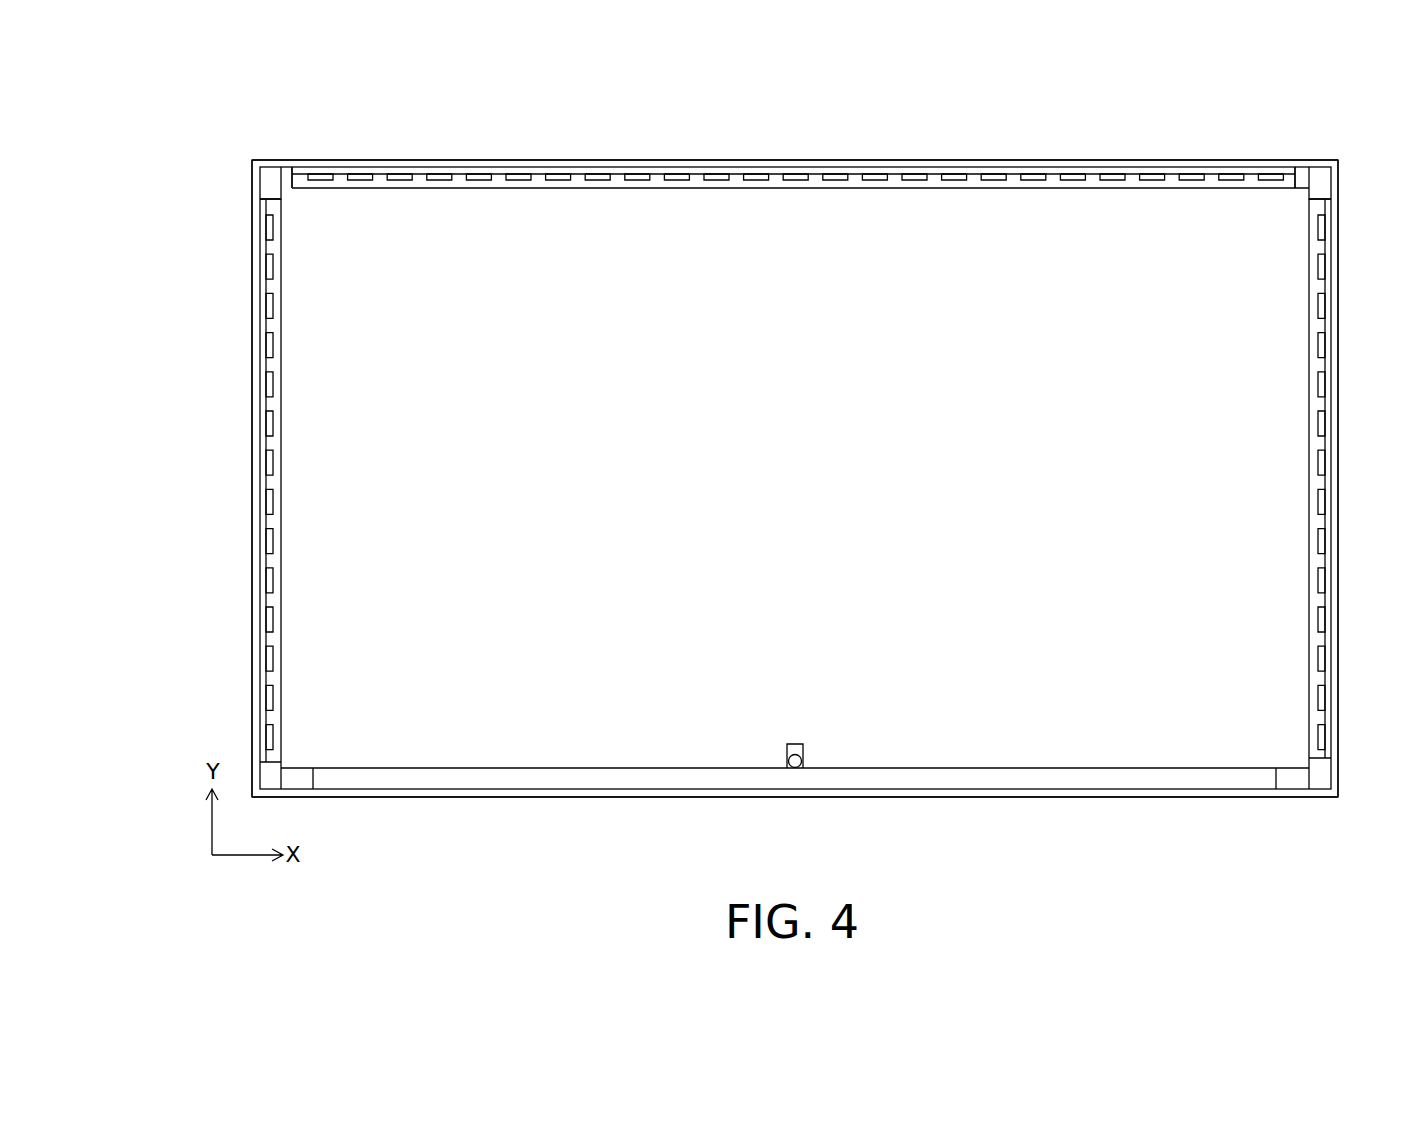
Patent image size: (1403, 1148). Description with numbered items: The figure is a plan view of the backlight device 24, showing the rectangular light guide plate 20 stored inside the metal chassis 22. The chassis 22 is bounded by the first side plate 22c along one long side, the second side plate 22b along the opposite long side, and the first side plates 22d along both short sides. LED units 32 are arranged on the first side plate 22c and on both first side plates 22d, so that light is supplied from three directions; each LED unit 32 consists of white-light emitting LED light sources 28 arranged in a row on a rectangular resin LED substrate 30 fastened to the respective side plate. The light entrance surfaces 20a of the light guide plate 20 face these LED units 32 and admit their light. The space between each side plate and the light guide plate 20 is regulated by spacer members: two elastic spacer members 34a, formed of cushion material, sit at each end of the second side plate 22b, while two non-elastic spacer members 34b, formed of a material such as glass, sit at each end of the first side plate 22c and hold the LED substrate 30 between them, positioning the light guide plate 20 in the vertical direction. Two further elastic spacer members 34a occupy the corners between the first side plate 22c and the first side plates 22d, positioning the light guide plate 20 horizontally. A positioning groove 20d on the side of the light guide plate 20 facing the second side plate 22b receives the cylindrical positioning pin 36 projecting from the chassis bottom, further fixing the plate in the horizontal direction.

The light guide plate 20 is at (936, 213).
The light entrance surface 20a is at (773, 188).
The positioning groove 20d is at (789, 750).
The chassis 22 is at (1335, 293).
The second side plate 22b is at (900, 792).
The first side plate 22c is at (1128, 163).
The first side plate 22d is at (257, 400).
The backlight device 24 is at (626, 136).
The LED light source 28 is at (401, 178).
The LED substrate 30 is at (381, 164).
The LED unit 32 is at (442, 93).
The elastic spacer member 34a is at (270, 183).
The non-elastic spacer member 34b is at (287, 176).
The positioning pin 36 is at (797, 769).